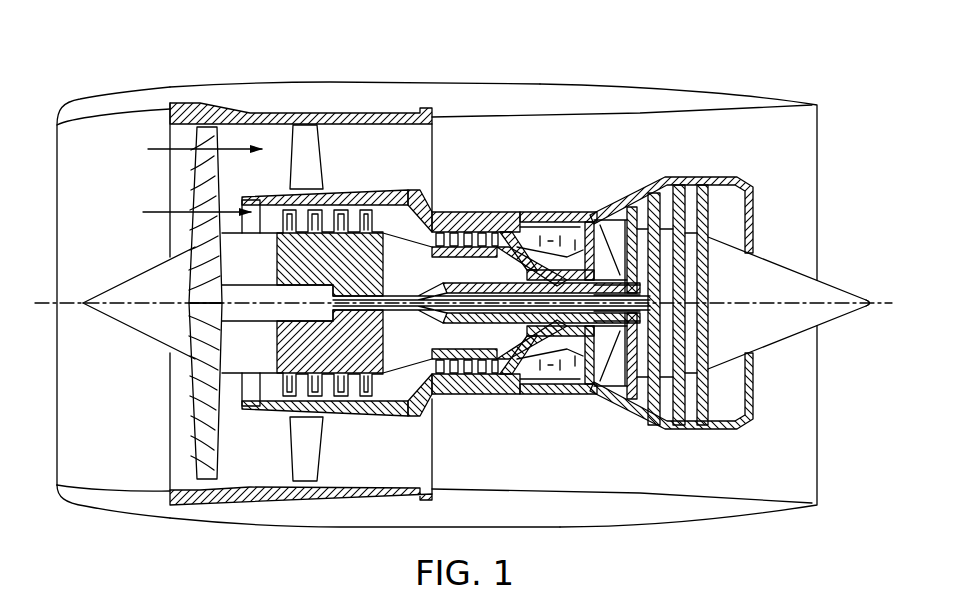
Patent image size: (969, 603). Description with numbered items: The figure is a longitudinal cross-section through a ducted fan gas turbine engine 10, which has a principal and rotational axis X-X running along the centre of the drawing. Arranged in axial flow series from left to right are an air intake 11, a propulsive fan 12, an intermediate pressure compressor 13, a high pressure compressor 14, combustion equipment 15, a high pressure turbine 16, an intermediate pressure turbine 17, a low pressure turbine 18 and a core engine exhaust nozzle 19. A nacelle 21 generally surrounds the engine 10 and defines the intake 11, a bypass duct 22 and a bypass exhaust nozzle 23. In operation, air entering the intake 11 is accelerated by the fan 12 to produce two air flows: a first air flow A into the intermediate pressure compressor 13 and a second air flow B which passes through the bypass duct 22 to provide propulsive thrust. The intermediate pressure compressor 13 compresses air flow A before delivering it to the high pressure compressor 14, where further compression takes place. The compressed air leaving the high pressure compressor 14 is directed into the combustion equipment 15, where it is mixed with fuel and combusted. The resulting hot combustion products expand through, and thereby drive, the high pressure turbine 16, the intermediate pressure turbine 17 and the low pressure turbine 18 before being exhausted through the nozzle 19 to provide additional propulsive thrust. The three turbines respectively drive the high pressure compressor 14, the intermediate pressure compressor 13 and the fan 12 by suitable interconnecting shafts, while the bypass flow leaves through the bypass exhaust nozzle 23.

The ducted fan gas turbine engine 10 is at (103, 84).
The air intake 11 is at (110, 115).
The propulsive fan 12 is at (203, 433).
The intermediate pressure compressor 13 is at (348, 393).
The high pressure compressor 14 is at (460, 233).
The combustion equipment 15 is at (530, 373).
The high pressure turbine 16 is at (587, 397).
The intermediate pressure turbine 17 is at (633, 203).
The low pressure turbine 18 is at (650, 423).
The core engine exhaust nozzle 19 is at (747, 187).
The nacelle 21 is at (313, 82).
The bypass duct 22 is at (717, 481).
The bypass exhaust nozzle 23 is at (818, 117).